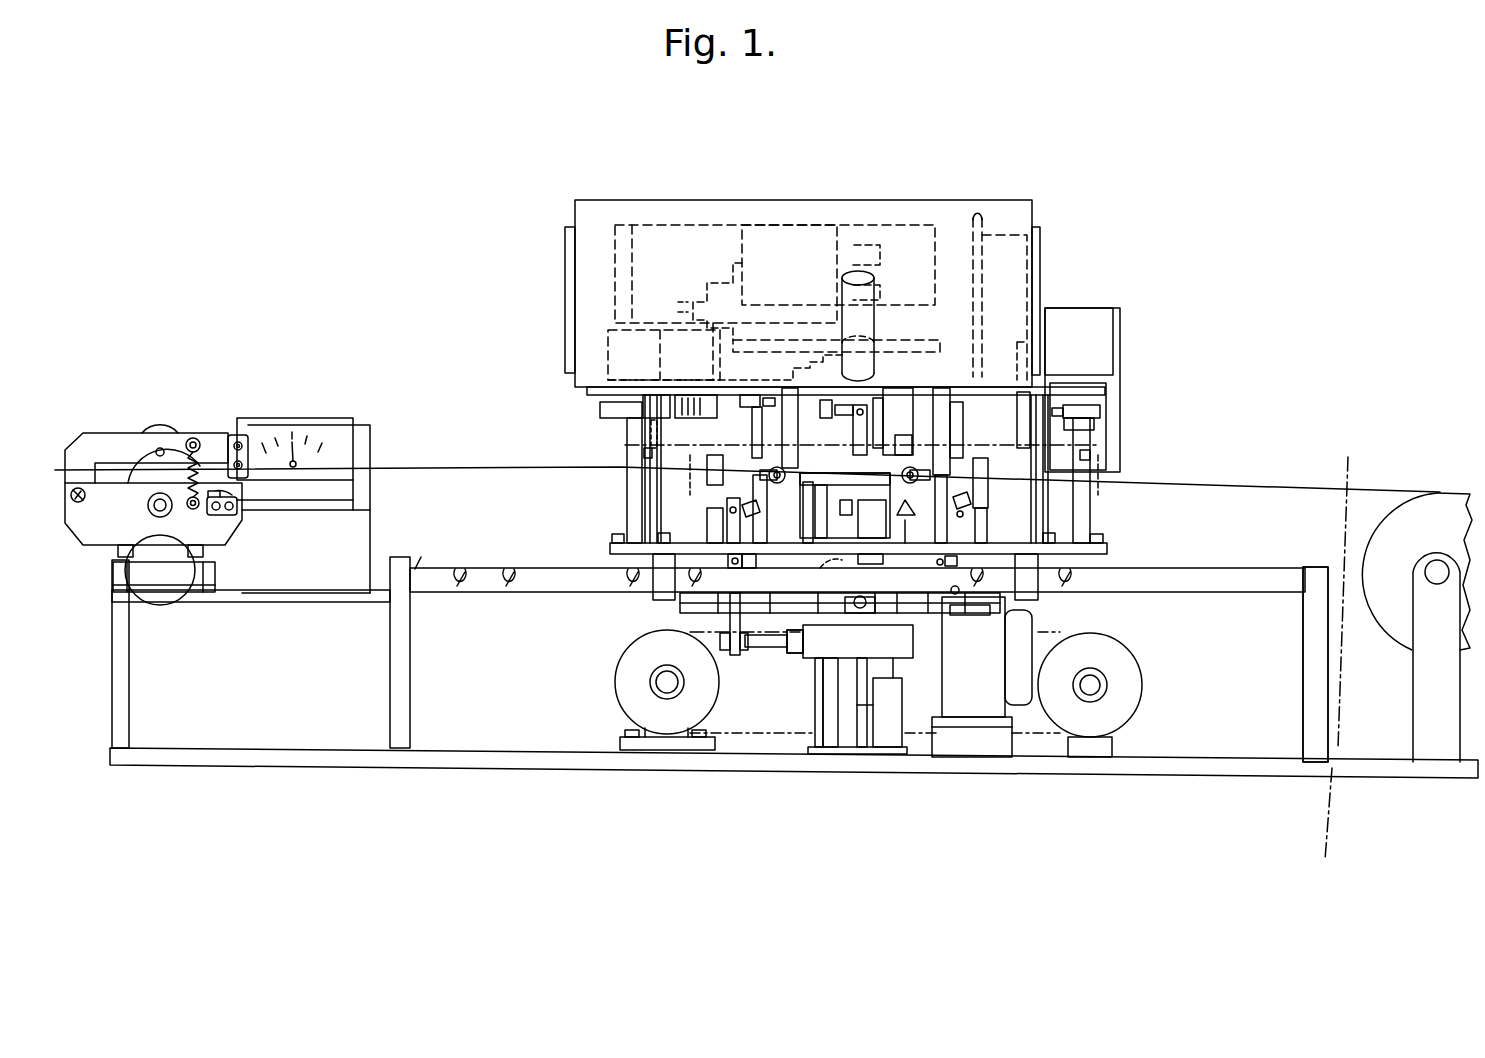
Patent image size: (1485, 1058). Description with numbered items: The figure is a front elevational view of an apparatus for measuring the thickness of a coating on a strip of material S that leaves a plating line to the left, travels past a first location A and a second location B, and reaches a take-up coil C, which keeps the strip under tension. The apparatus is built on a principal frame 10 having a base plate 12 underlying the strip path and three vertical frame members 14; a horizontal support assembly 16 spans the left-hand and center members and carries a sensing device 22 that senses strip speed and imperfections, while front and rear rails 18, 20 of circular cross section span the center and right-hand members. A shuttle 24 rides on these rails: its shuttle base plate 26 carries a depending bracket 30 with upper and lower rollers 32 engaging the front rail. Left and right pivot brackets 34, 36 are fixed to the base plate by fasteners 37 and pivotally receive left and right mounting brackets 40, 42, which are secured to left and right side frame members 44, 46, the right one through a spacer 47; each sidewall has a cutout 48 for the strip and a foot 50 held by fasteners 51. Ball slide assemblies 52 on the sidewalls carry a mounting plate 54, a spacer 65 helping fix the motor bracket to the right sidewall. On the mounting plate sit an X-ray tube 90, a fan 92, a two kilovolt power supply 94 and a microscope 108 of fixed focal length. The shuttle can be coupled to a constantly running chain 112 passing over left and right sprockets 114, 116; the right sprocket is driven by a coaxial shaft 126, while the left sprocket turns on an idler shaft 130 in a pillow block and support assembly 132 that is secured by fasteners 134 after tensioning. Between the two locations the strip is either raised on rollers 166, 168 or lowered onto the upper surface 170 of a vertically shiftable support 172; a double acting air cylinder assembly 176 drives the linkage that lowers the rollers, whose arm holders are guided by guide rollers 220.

The principal frame 10 is at (1256, 570).
The base plate 12 is at (494, 766).
The vertical frame members 14 is at (129, 676).
The horizontal support assembly 16 is at (246, 600).
The front rail 18 is at (440, 566).
The rear rail 20 is at (857, 577).
The sensing device 22 is at (254, 361).
The shuttle 24 is at (883, 374).
The shuttle base plate 26 is at (1007, 554).
The depending bracket 30 is at (882, 630).
The upper and lower rollers 32 is at (862, 592).
The left pivot bracket 34 is at (661, 500).
The right pivot bracket 36 is at (1020, 498).
The fasteners 37 is at (668, 533).
The left mounting bracket 40 is at (627, 438).
The right mounting bracket 42 is at (1043, 430).
The left side frame member 44 is at (627, 488).
The right side frame member 46 is at (1088, 510).
The spacer 47 is at (1050, 470).
The cutout 48 is at (641, 460).
The foot 50 is at (609, 547).
The fasteners 51 is at (610, 531).
The ball slide assembly 52 is at (570, 417).
The mounting plate 54 is at (1081, 380).
The spacer 65 is at (1099, 436).
The X-ray tube 90 is at (892, 224).
The fan 92 is at (1002, 234).
The two kilovolt power supply 94 is at (780, 336).
The microscope 108 is at (875, 290).
The chain 112 is at (748, 750).
The left sprocket 114 is at (649, 721).
The right sprocket 116 is at (1118, 695).
The coaxial shaft 126 is at (1100, 680).
The idler shaft 130 is at (660, 678).
The pillow block and support assembly 132 is at (657, 750).
The fasteners 134 is at (620, 723).
The roller 166 is at (782, 486).
The roller 168 is at (901, 486).
The upper surface 170 is at (814, 466).
The vertically shiftable support 172 is at (870, 498).
The double acting air cylinder assembly 176 is at (790, 665).
The guide rollers 220 is at (774, 564).
The first location A is at (682, 478).
The second location B is at (1110, 490).
The take-up coil C is at (1438, 490).
The strip of material S is at (457, 466).